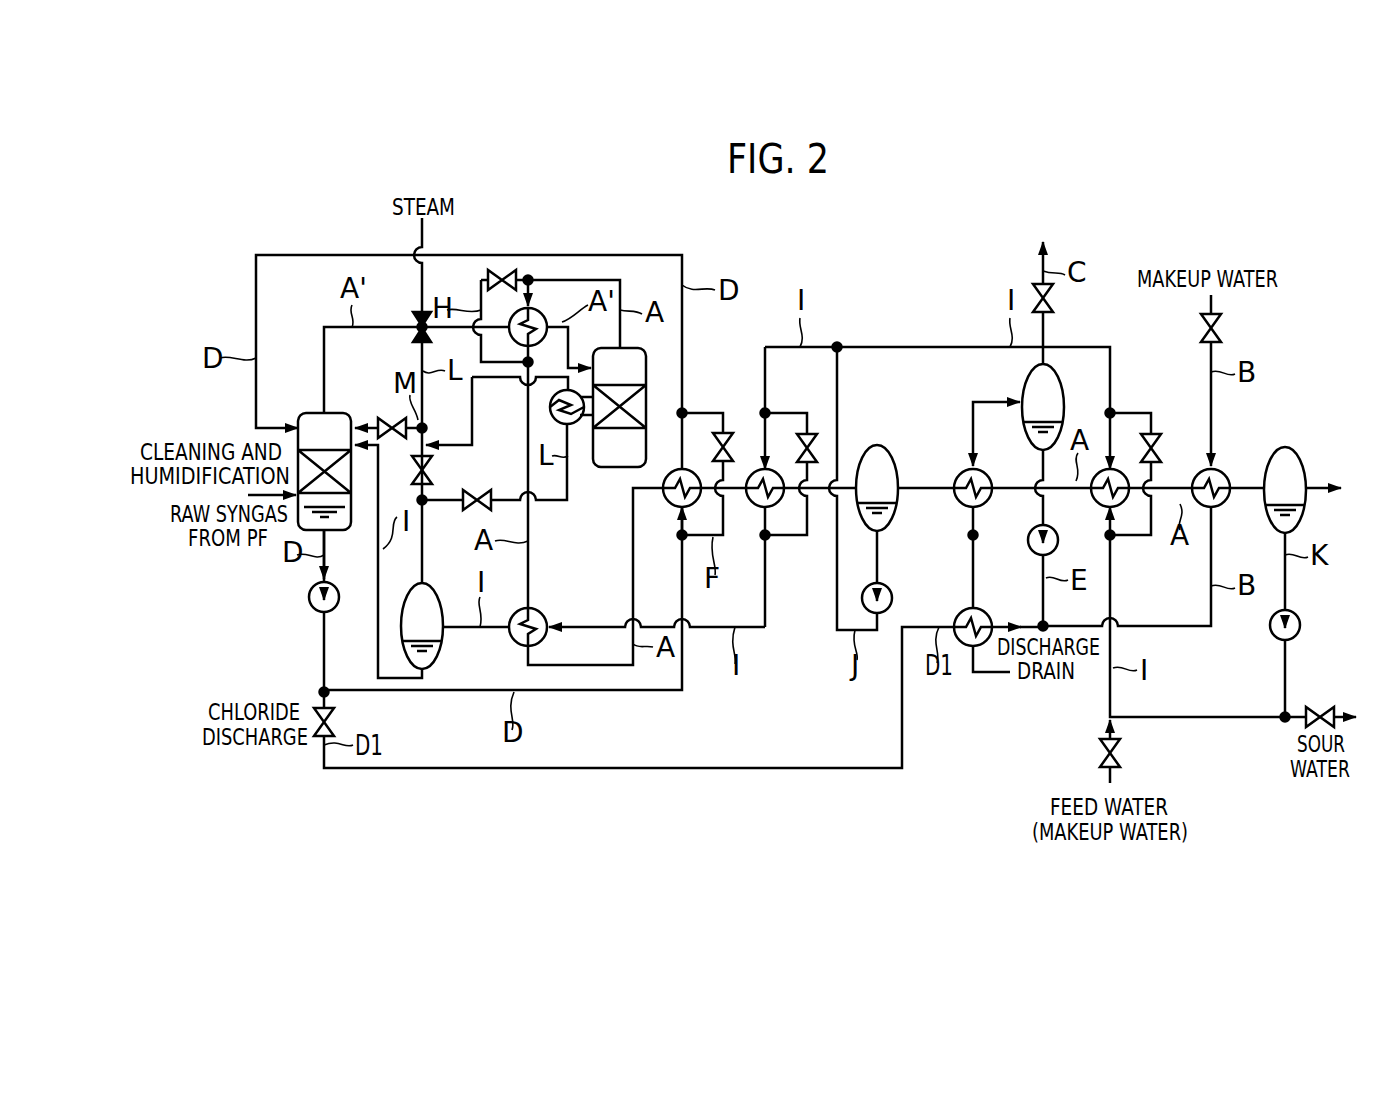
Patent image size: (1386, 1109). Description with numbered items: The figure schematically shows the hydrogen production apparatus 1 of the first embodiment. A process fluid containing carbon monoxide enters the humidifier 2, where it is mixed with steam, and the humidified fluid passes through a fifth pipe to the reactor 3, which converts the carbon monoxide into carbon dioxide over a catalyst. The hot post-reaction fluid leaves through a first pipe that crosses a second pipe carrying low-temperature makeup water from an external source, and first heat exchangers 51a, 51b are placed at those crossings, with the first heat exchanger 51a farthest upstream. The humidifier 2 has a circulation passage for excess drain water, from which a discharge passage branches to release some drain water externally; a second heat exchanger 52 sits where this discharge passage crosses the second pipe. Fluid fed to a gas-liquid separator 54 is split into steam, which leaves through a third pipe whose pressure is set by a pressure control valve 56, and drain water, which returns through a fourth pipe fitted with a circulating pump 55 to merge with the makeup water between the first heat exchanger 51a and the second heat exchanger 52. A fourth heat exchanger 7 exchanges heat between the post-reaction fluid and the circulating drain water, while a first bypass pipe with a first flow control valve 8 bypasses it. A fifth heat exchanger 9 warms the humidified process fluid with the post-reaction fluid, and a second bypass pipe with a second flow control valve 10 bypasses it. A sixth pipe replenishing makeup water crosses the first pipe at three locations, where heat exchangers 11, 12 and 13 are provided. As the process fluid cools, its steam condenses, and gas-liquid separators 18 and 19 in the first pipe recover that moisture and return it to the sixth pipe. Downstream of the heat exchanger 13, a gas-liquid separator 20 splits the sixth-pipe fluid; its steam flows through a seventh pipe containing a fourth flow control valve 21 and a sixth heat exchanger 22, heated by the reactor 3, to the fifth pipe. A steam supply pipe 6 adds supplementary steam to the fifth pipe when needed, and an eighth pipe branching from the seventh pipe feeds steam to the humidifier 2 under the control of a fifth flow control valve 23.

The hydrogen production apparatus 1 is at (1299, 316).
The humidifier 2 is at (336, 413).
The reactor 3 is at (648, 373).
The steam supply pipe 6 is at (421, 283).
The fourth heat exchanger 7 is at (669, 506).
The first flow control valve 8 is at (723, 432).
The fifth heat exchanger 9 is at (544, 314).
The second flow control valve 10 is at (490, 280).
The heat exchanger 11 is at (1125, 467).
The heat exchanger 12 is at (778, 469).
The heat exchanger 13 is at (544, 609).
The gas-liquid separator 18 is at (880, 446).
The gas-liquid separator 19 is at (1306, 449).
The gas-liquid separator 20 is at (433, 586).
The fourth flow control valve 21 is at (478, 496).
The sixth heat exchanger 22 is at (572, 432).
The fifth flow control valve 23 is at (408, 471).
The first heat exchanger 51a is at (1220, 468).
The first heat exchanger 51b is at (990, 469).
The second heat exchanger 52 is at (975, 608).
The gas-liquid separator 54 is at (1058, 377).
The circulating pump 55 is at (1053, 538).
The pressure control valve 56 is at (1052, 300).